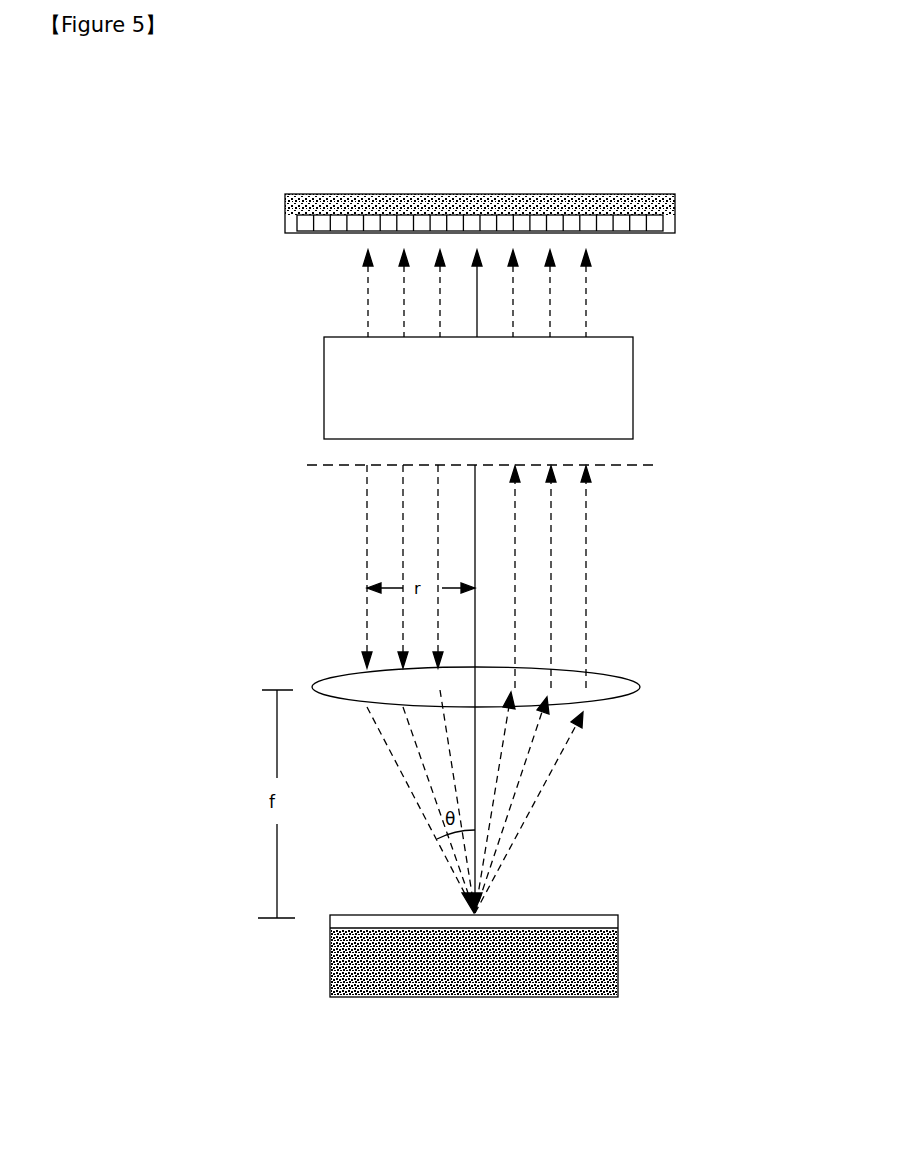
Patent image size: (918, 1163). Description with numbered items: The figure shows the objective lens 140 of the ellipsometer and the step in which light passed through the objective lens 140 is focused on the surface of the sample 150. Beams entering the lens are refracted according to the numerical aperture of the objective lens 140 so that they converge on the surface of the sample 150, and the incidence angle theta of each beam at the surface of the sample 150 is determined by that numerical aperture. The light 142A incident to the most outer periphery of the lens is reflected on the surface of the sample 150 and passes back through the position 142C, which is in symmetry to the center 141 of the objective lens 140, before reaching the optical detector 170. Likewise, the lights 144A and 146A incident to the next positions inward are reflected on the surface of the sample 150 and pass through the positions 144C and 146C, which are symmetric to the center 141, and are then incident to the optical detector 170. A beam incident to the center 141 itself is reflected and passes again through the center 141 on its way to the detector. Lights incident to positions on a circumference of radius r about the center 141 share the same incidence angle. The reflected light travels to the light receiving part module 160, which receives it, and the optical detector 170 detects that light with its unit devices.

The optical detector 170 is at (288, 193).
The light receiving part module 160 is at (323, 367).
The center of the objective lens 141 is at (475, 510).
The light incident to the most outer periphery 142A is at (367, 525).
The light incident to the next position 144A is at (403, 562).
The light incident to the next position 146A is at (438, 628).
The position in symmetry to the center 142C is at (586, 535).
The position in symmetry to the center 144C is at (551, 578).
The position in symmetry to the center 146C is at (515, 635).
The objective lens 140 is at (312, 688).
The sample 150 is at (620, 937).